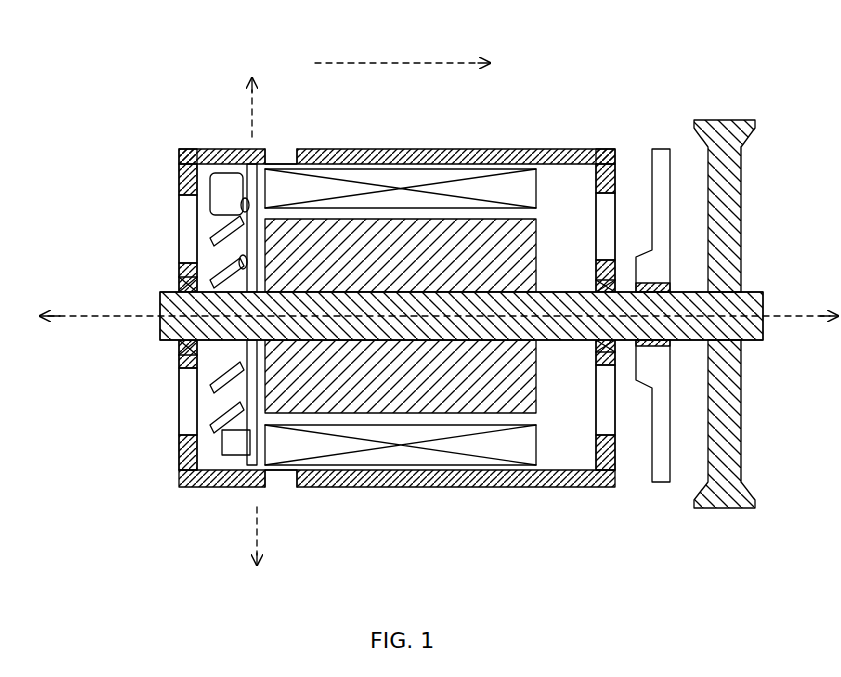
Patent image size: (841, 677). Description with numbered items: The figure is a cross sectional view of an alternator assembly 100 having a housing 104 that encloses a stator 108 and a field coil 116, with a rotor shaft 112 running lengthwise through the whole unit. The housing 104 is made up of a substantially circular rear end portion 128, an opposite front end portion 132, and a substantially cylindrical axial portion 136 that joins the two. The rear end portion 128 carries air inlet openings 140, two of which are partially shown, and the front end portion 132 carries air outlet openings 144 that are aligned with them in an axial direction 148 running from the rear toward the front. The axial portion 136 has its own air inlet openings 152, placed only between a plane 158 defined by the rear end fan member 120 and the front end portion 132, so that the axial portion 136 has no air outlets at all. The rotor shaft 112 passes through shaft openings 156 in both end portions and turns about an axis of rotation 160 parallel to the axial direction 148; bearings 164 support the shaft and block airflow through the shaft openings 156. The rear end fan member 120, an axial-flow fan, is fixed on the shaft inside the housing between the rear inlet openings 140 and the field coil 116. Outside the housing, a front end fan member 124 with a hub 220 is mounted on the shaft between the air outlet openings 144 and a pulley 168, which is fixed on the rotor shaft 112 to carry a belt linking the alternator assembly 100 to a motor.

The alternator assembly 100 is at (608, 70).
The housing 104 is at (533, 136).
The stator 108 is at (518, 447).
The rotor shaft 112 is at (753, 300).
The field coil 116 is at (522, 266).
The rear end fan member 120 is at (212, 452).
The front end fan member 124 is at (641, 492).
The rear end portion 128 is at (177, 185).
The front end portion 132 is at (617, 160).
The axial portion 136 is at (373, 150).
The air inlet openings 140 is at (190, 258).
The air outlet openings 144 is at (600, 260).
The axial direction 148 is at (378, 62).
The air inlet openings 152 is at (270, 150).
The shaft openings 156 is at (175, 278).
The plane 158 is at (249, 122).
The axis of rotation 160 is at (75, 322).
The bearings 164 is at (180, 343).
The pulley 168 is at (728, 125).
The hub 220 is at (659, 470).